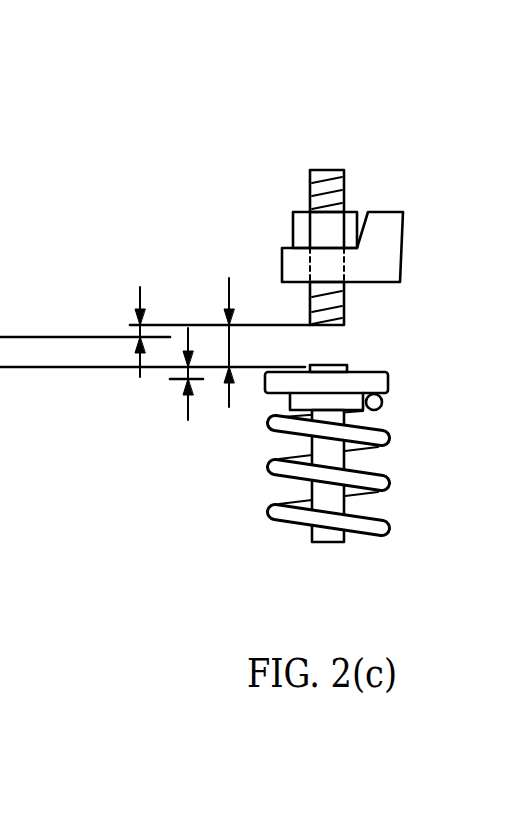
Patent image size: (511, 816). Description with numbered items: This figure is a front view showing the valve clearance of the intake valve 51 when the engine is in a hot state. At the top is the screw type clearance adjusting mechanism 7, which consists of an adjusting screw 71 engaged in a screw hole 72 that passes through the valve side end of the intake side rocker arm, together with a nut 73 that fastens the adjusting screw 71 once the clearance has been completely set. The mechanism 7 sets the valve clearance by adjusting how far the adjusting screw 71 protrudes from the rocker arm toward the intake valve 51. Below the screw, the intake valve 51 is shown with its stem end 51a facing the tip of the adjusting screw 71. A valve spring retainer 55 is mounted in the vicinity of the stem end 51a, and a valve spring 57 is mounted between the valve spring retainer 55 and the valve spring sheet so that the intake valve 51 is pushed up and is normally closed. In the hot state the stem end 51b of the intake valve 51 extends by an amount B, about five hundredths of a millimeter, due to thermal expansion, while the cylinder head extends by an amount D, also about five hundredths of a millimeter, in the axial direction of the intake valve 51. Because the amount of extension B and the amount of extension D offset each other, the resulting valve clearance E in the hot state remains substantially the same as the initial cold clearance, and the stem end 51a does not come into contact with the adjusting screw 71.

The screw type clearance adjusting mechanism 7 is at (335, 175).
The adjusting screw 71 is at (308, 187).
The screw hole 72 is at (345, 266).
The nut 73 is at (293, 232).
The intake valve 51 is at (375, 479).
The stem end 51a is at (333, 364).
The stem end 51b is at (386, 513).
The valve spring retainer 55 is at (388, 380).
The valve spring 57 is at (388, 440).
The amount of extension B is at (180, 374).
The amount of extension D is at (133, 329).
The valve clearance E is at (227, 347).